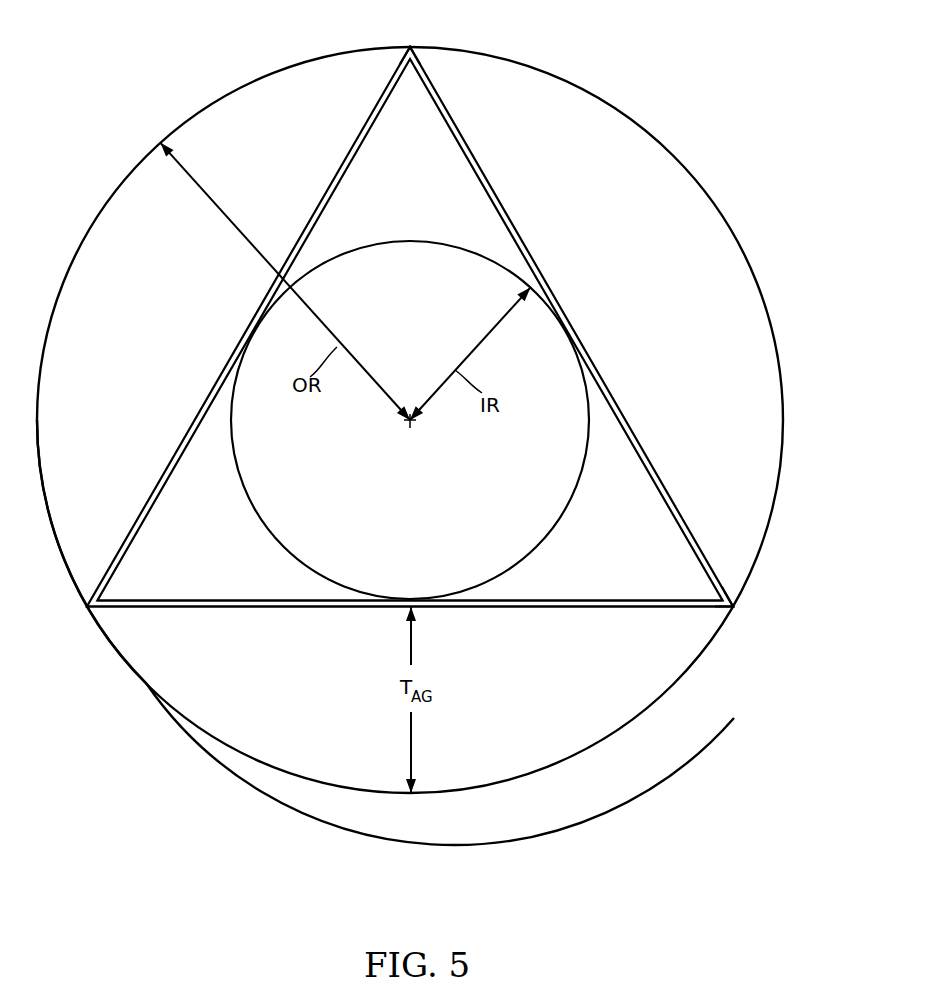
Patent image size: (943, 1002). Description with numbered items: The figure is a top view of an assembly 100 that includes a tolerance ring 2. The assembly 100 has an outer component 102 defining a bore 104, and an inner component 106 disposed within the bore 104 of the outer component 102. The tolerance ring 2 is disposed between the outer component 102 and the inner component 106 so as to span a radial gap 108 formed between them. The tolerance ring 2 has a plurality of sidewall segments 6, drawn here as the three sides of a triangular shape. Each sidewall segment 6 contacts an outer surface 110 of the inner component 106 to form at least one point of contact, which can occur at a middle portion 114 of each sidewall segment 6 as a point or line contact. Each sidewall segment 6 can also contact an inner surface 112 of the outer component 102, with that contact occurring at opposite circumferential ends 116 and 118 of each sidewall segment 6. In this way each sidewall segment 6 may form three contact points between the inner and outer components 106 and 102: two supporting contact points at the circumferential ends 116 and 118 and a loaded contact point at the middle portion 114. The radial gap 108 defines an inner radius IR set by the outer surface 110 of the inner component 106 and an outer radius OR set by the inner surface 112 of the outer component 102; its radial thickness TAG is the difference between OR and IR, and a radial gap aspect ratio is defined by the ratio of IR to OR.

The assembly 100 is at (753, 68).
The outer component 102 is at (752, 268).
The bore 104 is at (147, 683).
The inner component 106 is at (440, 514).
The radial gap 108 is at (708, 392).
The outer surface 110 is at (554, 527).
The inner surface 112 is at (634, 718).
The middle portion 114 is at (580, 342).
The circumferential end 116 is at (410, 52).
The circumferential end 118 is at (735, 600).
The tolerance ring 2 is at (208, 604).
The sidewall segment 6 is at (160, 500).